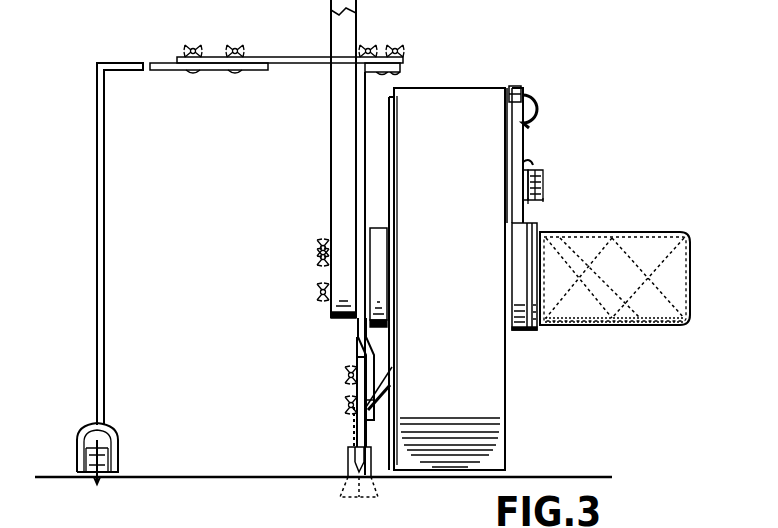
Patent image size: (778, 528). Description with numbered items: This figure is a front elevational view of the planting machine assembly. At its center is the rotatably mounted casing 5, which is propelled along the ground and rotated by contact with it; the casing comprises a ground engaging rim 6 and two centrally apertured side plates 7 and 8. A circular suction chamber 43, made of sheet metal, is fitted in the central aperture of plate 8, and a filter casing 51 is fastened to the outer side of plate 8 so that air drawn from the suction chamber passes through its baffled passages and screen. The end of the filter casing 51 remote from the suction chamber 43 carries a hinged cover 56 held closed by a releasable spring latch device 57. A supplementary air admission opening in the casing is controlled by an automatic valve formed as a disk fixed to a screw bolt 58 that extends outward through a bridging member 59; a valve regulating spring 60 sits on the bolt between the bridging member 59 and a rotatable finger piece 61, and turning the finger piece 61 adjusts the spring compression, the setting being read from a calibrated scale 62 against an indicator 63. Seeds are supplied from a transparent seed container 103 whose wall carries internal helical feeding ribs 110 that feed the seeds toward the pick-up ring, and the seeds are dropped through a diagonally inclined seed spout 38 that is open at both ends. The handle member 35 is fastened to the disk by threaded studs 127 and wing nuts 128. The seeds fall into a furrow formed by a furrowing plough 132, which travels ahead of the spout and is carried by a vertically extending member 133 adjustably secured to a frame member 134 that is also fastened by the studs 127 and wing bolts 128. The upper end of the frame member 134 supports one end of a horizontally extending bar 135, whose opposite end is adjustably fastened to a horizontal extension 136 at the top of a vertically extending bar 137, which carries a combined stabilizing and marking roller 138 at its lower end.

The casing 5 is at (451, 86).
The ground engaging rim 6 is at (227, 527).
The side plate 7 is at (388, 170).
The side plate 8 is at (510, 158).
The handle member 35 is at (337, 137).
The seed spout 38 is at (378, 388).
The suction chamber 43 is at (520, 273).
The filter casing 51 is at (516, 138).
The hinged cover 56 is at (525, 104).
The spring latch device 57 is at (540, 120).
The screw bolt 58 is at (545, 188).
The bridging member 59 is at (521, 206).
The valve regulating spring 60 is at (533, 203).
The finger piece 61 is at (541, 200).
The calibrated scale 62 is at (527, 178).
The indicator 63 is at (535, 168).
The seed container 103 is at (632, 233).
The feeding ribs 110 is at (578, 298).
The threaded studs 127 is at (318, 258).
The wing nuts 128 is at (322, 246).
The furrowing plough 132 is at (345, 465).
The vertically extending member 133 is at (355, 385).
The frame member 134 is at (358, 332).
The horizontally extending bar 135 is at (290, 57).
The horizontal extension 136 is at (163, 70).
The vertically extending bar 137 is at (105, 247).
The stabilizing and marking roller 138 is at (108, 440).